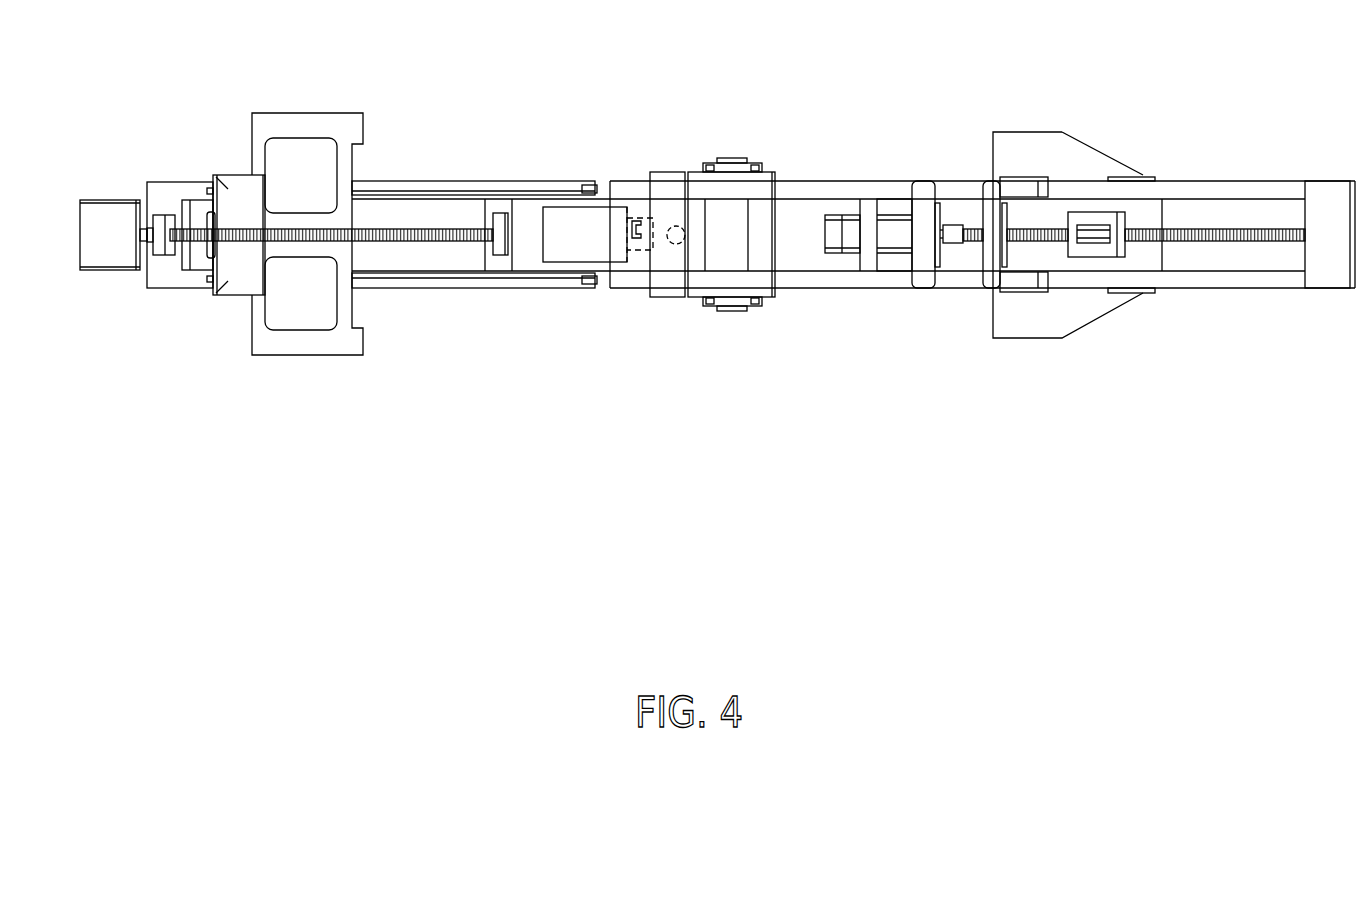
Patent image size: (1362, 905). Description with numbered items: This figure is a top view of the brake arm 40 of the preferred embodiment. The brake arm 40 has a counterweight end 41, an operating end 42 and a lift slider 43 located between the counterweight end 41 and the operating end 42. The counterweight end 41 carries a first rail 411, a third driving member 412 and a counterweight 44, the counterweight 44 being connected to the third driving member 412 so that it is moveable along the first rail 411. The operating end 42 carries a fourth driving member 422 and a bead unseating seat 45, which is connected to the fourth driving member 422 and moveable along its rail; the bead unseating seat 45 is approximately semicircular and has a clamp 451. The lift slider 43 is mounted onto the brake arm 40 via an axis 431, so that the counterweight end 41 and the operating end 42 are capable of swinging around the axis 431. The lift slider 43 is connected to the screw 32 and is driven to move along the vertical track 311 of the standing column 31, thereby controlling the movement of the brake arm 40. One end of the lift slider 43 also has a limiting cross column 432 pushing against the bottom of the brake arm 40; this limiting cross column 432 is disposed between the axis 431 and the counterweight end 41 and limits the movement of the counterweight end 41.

The brake arm 40 is at (816, 168).
The counterweight end 41 is at (177, 195).
The first rail 411 is at (435, 282).
The third driving member 412 is at (445, 235).
The operating end 42 is at (1332, 202).
The fourth driving member 422 is at (1195, 237).
The lift slider 43 is at (733, 247).
The axis 431 is at (733, 306).
The limiting cross column 432 is at (663, 297).
The counterweight 44 is at (305, 160).
The bead unseating seat 45 is at (1065, 155).
The clamp 451 is at (1103, 232).
The standing column 31 is at (577, 250).
The vertical track 311 is at (636, 218).
The screw 32 is at (677, 226).